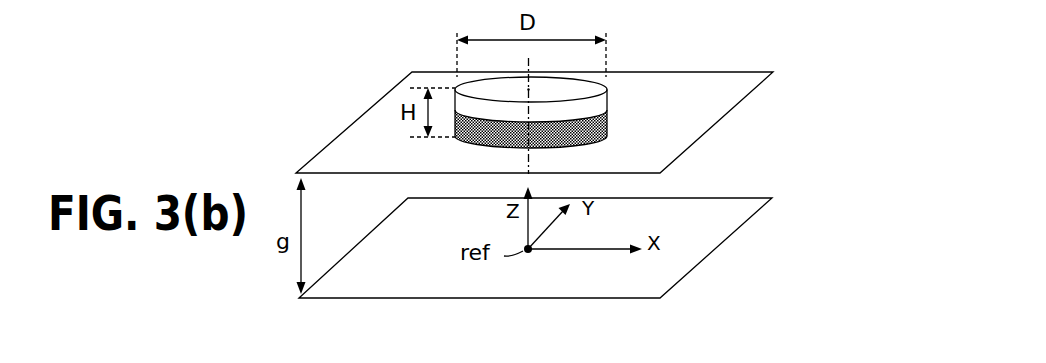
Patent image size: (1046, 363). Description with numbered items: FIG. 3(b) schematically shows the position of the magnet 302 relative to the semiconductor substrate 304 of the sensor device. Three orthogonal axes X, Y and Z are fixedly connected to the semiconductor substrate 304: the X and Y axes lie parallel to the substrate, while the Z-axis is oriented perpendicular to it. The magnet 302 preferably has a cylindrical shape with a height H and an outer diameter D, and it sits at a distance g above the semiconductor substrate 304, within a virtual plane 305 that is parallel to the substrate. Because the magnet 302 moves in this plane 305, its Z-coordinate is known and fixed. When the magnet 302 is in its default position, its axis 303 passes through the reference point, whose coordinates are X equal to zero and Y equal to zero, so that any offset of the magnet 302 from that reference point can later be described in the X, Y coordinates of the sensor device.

The magnet 302 is at (597, 108).
The axis 303 is at (535, 66).
The semiconductor substrate 304 is at (730, 205).
The virtual plane 305 is at (733, 80).